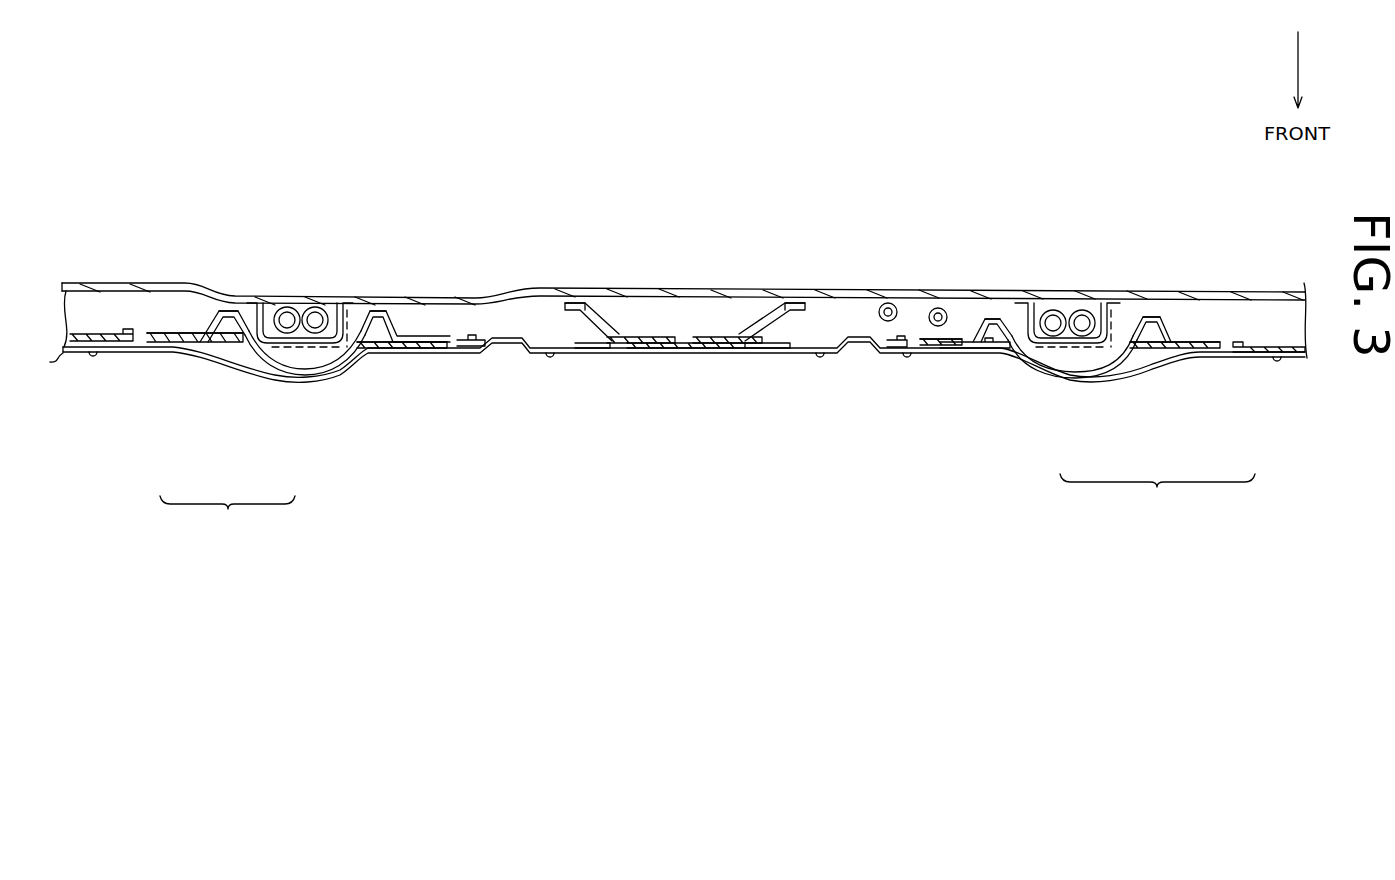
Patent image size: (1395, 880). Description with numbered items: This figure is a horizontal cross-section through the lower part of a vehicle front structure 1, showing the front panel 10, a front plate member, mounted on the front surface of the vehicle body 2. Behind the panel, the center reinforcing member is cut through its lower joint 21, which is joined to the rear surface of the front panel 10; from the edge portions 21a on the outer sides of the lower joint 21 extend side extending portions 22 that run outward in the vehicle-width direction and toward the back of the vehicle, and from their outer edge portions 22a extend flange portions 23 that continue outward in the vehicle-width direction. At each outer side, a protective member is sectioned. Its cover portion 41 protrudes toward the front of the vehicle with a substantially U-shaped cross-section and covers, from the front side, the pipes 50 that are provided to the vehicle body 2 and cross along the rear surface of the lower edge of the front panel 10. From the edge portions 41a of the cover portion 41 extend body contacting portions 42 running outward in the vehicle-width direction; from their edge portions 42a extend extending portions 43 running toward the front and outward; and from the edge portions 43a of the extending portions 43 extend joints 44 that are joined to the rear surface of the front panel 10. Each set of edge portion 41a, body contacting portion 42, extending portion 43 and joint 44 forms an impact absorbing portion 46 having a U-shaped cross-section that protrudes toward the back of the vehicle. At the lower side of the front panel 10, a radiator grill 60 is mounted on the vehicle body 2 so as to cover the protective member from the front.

The vehicle front structure 1 is at (748, 132).
The vehicle body 2 is at (1078, 288).
The front panel 10 is at (73, 357).
The lower joint 21 is at (645, 299).
The edge portions 21a is at (624, 352).
The side extending portions 22 is at (598, 299).
The edge portions 22a is at (582, 352).
The flange portions 23 is at (571, 299).
The cover portion 41 is at (288, 374).
The edge portions 41a is at (352, 305).
The body contacting portions 42 is at (227, 344).
The edge portions 42a is at (230, 305).
The extending portions 43 is at (198, 352).
The edge portions 43a is at (188, 333).
The joints 44 is at (130, 330).
The impact absorbing portion 46 is at (707, 505).
The pipes 50 is at (286, 307).
The radiator grill 60 is at (95, 358).